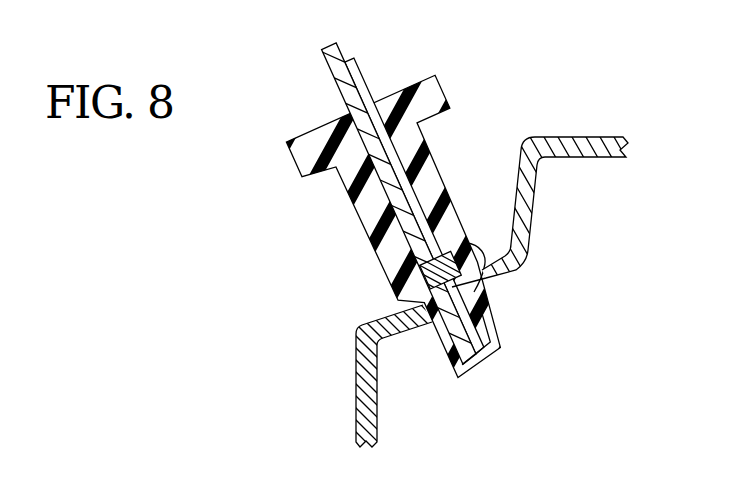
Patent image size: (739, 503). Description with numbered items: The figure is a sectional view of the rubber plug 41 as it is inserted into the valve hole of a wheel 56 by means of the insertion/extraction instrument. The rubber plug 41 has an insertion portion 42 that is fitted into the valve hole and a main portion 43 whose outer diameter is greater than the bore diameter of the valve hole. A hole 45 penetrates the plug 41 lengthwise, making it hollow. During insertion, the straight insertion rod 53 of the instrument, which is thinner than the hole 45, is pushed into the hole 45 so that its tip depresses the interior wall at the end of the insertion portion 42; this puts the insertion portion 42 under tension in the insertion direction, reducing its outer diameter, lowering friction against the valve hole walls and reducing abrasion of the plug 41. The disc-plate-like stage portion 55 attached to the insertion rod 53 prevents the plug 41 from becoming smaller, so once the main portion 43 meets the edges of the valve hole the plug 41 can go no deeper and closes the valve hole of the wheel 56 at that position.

The rubber plug 41 is at (322, 228).
The insertion portion 42 is at (493, 348).
The main portion 43 is at (395, 250).
The hole 45 is at (398, 165).
The insertion rod 53 is at (352, 64).
The stage portion 55 is at (490, 271).
The wheel 56 is at (582, 150).